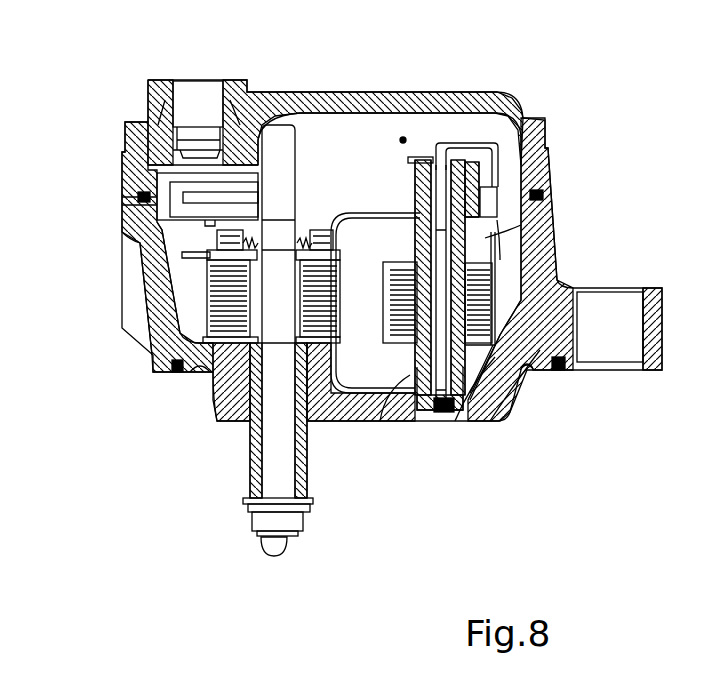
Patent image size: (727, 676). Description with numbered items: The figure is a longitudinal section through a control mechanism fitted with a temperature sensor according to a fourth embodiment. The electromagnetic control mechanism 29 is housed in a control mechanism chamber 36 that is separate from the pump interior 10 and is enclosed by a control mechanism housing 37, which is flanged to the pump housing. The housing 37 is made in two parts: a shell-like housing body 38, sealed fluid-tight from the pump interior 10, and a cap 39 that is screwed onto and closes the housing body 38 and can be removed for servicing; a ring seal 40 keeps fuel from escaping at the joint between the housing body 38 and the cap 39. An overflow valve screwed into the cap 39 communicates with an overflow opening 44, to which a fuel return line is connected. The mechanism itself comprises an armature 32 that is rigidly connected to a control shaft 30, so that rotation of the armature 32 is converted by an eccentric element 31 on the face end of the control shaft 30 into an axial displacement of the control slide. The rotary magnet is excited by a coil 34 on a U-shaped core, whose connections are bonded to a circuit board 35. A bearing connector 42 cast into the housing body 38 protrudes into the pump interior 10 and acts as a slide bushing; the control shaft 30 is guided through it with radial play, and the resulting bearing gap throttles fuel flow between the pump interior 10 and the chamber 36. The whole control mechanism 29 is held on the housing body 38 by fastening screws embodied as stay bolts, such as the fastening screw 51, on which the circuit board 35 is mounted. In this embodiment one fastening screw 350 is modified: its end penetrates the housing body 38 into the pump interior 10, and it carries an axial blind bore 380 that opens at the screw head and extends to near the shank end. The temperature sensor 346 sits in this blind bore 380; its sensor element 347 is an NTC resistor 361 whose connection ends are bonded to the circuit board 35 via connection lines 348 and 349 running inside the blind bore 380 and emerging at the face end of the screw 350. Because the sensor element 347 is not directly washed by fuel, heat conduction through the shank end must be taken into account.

The pump interior 10 is at (392, 531).
The electromagnetic control mechanism 29 is at (190, 296).
The control shaft 30 is at (277, 445).
The eccentric element 31 is at (263, 557).
The armature 32 is at (220, 315).
The coil 34 is at (385, 365).
The circuit board 35 is at (487, 207).
The control mechanism chamber 36 is at (510, 287).
The control mechanism housing 37 is at (112, 161).
The housing body 38 is at (155, 266).
The cap 39 is at (155, 118).
The ring seal 40 is at (135, 197).
The bearing connector 42 is at (253, 430).
The overflow opening 44 is at (188, 115).
The fastening screw 51 is at (207, 223).
The temperature sensor 346 is at (401, 138).
The sensor element 347 is at (450, 413).
The connection line 348 is at (410, 350).
The connection line 349 is at (512, 383).
The fastening screw 350 is at (470, 157).
The NTC resistor 361 is at (435, 410).
The blind bore 380 is at (485, 238).